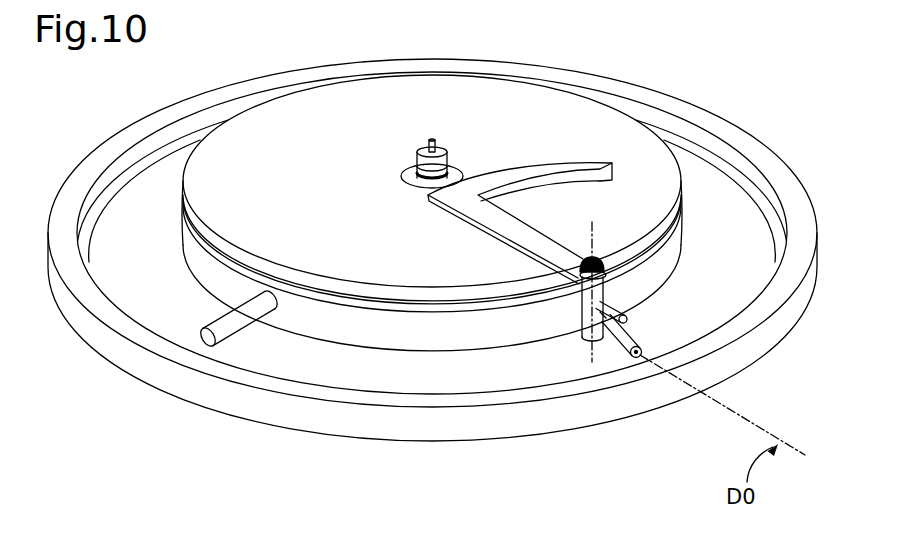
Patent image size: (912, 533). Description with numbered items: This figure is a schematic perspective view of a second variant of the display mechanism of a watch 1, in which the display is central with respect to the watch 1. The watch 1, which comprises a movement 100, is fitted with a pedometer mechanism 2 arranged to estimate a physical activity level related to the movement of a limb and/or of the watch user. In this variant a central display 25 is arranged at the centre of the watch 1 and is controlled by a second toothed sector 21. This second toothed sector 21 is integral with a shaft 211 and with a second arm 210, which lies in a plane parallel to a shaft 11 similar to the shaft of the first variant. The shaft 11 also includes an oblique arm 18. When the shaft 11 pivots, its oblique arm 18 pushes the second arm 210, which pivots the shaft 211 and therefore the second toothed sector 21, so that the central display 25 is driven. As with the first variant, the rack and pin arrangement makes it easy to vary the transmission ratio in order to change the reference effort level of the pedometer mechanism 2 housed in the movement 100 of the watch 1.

The watch 1 is at (775, 83).
The pedometer mechanism 2 is at (696, 310).
The second toothed sector 21 is at (600, 166).
The central display 25 is at (459, 169).
The movement 100 is at (354, 350).
The second arm 210 is at (625, 319).
The shaft 11 is at (641, 356).
The oblique arm 18 is at (612, 345).
The shaft 211 is at (581, 337).